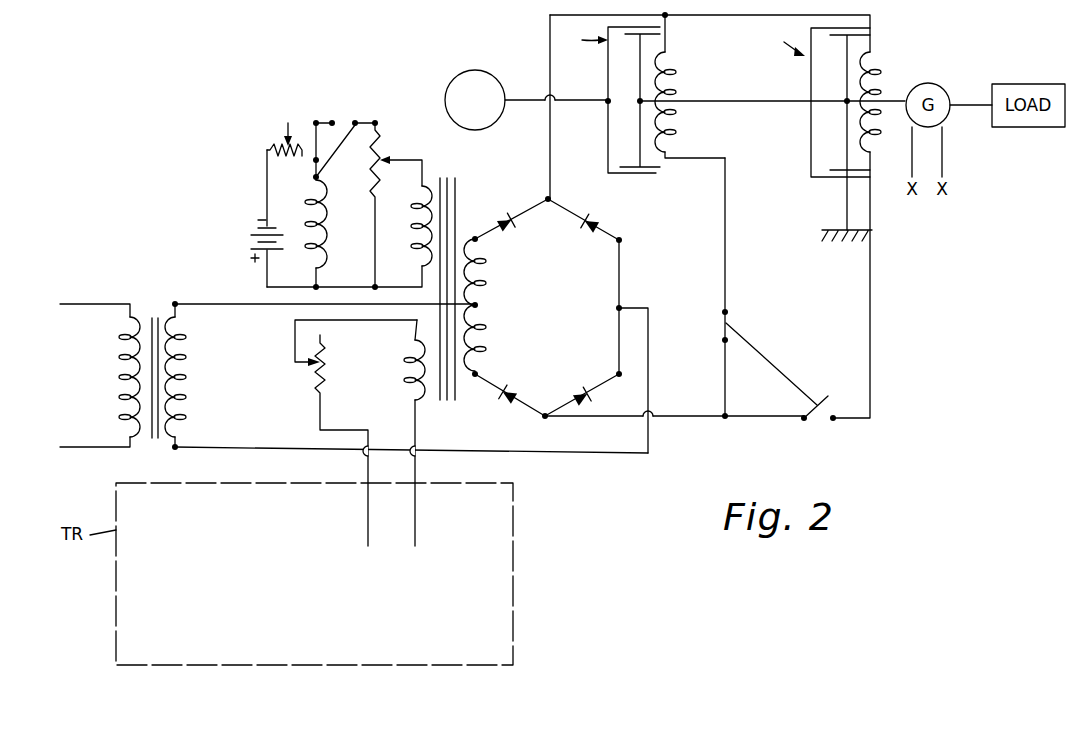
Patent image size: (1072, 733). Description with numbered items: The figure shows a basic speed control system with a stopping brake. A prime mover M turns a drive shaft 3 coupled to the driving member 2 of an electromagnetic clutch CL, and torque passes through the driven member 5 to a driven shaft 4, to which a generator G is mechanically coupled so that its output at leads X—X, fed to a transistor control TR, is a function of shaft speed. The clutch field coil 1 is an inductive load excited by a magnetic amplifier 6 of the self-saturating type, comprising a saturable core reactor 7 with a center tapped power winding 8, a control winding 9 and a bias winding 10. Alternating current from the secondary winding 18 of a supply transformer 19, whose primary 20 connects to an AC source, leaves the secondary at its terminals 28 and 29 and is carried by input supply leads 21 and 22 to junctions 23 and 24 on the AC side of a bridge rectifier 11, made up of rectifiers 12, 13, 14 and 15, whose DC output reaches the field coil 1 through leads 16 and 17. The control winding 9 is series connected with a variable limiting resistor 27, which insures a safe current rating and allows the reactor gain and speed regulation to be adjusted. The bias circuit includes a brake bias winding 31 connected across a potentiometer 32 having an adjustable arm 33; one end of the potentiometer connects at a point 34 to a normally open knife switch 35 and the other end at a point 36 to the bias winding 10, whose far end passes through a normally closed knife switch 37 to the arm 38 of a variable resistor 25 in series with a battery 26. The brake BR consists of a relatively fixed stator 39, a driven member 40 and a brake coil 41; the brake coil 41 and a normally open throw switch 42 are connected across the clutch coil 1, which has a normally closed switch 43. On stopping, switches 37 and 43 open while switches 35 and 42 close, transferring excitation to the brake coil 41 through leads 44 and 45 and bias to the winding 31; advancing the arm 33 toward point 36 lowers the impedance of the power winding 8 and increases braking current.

The field coil 1 is at (661, 73).
The driving member 2 is at (612, 175).
The drive shaft 3 is at (530, 100).
The driven shaft 4 is at (724, 102).
The driven member 5 is at (635, 34).
The magnetic amplifier 6 is at (459, 193).
The saturable core reactor 7 is at (446, 405).
The center tapped power winding 8 is at (481, 265).
The control winding 9 is at (410, 364).
The bias winding 10 is at (318, 211).
The bridge rectifier 11 is at (530, 313).
The rectifier 12 is at (516, 226).
The rectifier 13 is at (590, 229).
The rectifier 14 is at (518, 392).
The rectifier 15 is at (577, 393).
The lead 16 is at (548, 146).
The lead 17 is at (700, 420).
The secondary winding 18 is at (188, 382).
The supply transformer 19 is at (153, 308).
The primary 20 is at (125, 378).
The input supply lead 21 is at (226, 302).
The input supply lead 22 is at (279, 453).
The junction 23 is at (478, 306).
The junction 24 is at (622, 307).
The variable resistor 25 is at (284, 163).
The battery 26 is at (260, 238).
The variable limiting resistor 27 is at (326, 378).
The terminal 28 is at (177, 300).
The terminal 29 is at (178, 451).
The brake bias winding 31 is at (417, 230).
The potentiometer 32 is at (374, 191).
The adjustable arm 33 is at (406, 159).
The point 34 is at (376, 121).
The knife switch 35 is at (347, 128).
The point 36 is at (376, 287).
The knife switch 37 is at (322, 180).
The arm 38 is at (285, 131).
The stator 39 is at (815, 178).
The driven member 40 is at (836, 36).
The brake coil 41 is at (872, 77).
The throw switch 42 is at (826, 399).
The switch 43 is at (728, 318).
The lead 44 is at (732, 17).
The lead 45 is at (871, 292).